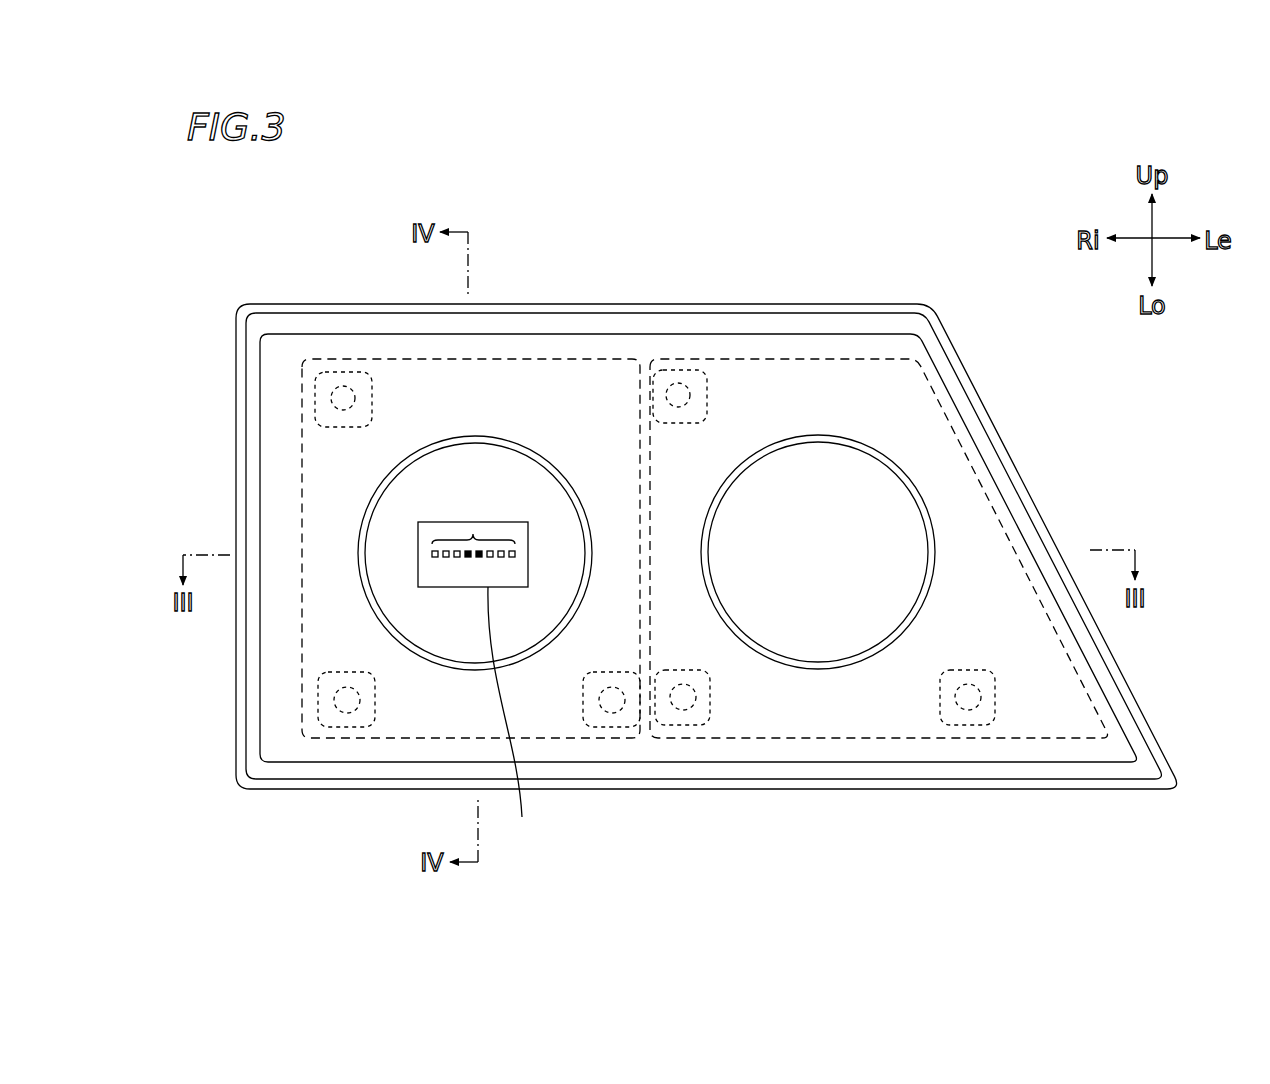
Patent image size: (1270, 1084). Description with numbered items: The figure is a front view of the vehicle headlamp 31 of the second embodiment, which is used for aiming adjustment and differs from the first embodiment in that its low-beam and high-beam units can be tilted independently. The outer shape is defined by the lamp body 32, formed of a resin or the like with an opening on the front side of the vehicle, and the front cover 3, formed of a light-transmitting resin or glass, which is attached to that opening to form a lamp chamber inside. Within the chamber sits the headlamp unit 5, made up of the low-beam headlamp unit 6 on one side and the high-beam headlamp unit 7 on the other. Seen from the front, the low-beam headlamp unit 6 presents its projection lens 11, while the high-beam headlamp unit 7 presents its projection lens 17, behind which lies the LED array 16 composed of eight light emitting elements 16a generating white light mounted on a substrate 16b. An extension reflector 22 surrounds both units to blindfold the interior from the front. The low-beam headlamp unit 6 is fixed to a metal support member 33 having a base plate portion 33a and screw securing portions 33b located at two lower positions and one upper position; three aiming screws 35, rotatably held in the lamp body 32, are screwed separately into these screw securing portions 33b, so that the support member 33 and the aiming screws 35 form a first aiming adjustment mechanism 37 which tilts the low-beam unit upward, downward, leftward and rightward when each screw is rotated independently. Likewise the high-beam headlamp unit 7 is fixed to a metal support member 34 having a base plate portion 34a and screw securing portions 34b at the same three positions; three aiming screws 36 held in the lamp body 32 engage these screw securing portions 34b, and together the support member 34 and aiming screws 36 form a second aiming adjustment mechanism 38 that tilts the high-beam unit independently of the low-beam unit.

The front cover 3 is at (995, 455).
The headlamp unit 5 is at (712, 222).
The low-beam headlamp unit 6 is at (818, 438).
The high-beam headlamp unit 7 is at (505, 443).
The projection lens 11 is at (827, 648).
The LED array 16 is at (427, 555).
The light emitting elements 16a is at (473, 525).
The substrate 16b is at (517, 719).
The projection lens 17 is at (563, 590).
The extension reflector 22 is at (1060, 747).
The vehicle headlamp 31 is at (300, 261).
The lamp body 32 is at (979, 398).
The support member 33 is at (908, 742).
The base plate portion 33a is at (718, 726).
The screw securing portions 33b is at (680, 423).
The support member 34 is at (296, 436).
The base plate portion 34a is at (398, 726).
The screw securing portions 34b is at (343, 410).
The aiming screws 35 is at (690, 395).
The aiming screws 36 is at (331, 393).
The first aiming adjustment mechanism 37 is at (920, 846).
The second aiming adjustment mechanism 38 is at (190, 254).